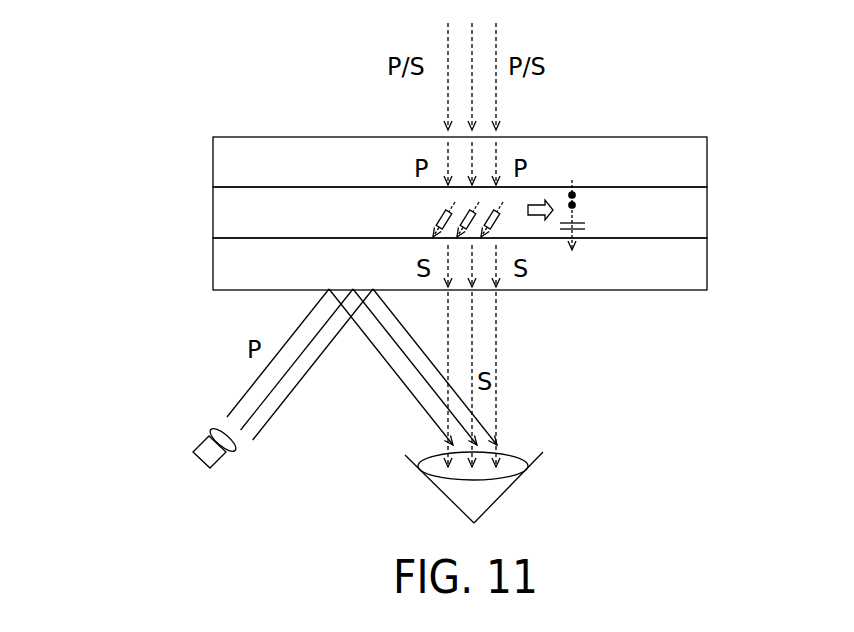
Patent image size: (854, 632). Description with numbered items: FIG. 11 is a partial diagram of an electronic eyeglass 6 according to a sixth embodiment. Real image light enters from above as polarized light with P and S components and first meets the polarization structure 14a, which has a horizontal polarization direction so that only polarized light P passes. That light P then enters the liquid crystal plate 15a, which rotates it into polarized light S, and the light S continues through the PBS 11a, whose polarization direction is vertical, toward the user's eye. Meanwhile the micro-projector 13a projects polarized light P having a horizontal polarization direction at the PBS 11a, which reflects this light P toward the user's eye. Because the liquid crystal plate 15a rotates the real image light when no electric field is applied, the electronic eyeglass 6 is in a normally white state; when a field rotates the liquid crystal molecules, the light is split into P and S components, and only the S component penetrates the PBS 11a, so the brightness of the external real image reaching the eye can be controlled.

The electronic eyeglass 6 is at (54, 28).
The polarization structure 14a is at (697, 162).
The liquid crystal plate 15a is at (697, 213).
The PBS 11a is at (697, 265).
The micro-projector 13a is at (200, 443).